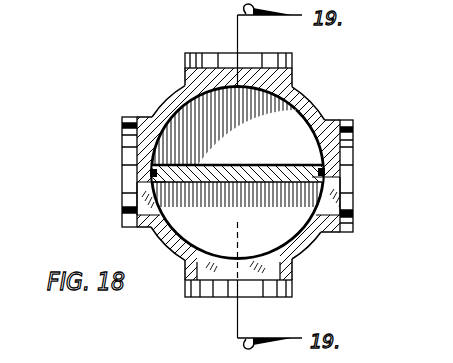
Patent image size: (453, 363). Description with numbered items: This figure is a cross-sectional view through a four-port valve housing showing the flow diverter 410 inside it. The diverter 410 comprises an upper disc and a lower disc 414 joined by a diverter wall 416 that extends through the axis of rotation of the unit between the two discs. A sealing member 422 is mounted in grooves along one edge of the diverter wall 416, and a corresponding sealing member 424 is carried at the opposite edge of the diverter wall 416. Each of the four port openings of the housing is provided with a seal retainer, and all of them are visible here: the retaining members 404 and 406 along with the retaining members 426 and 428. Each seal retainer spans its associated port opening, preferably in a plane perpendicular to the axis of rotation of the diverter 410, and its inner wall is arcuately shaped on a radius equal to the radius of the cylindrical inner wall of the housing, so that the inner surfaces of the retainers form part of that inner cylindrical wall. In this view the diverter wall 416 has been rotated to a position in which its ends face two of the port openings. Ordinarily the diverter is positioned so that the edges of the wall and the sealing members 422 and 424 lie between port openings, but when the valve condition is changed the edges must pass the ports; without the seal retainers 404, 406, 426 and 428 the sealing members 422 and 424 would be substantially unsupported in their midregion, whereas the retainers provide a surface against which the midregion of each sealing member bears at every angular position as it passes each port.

The seal retainer 404 is at (273, 271).
The seal retainer 406 is at (217, 66).
The diverter 410 is at (283, 151).
The lower disc 414 is at (250, 139).
The diverter wall 416 is at (217, 164).
The sealing member 422 is at (157, 172).
The sealing member 424 is at (323, 168).
The seal retainer 426 is at (357, 193).
The seal retainer 428 is at (137, 162).